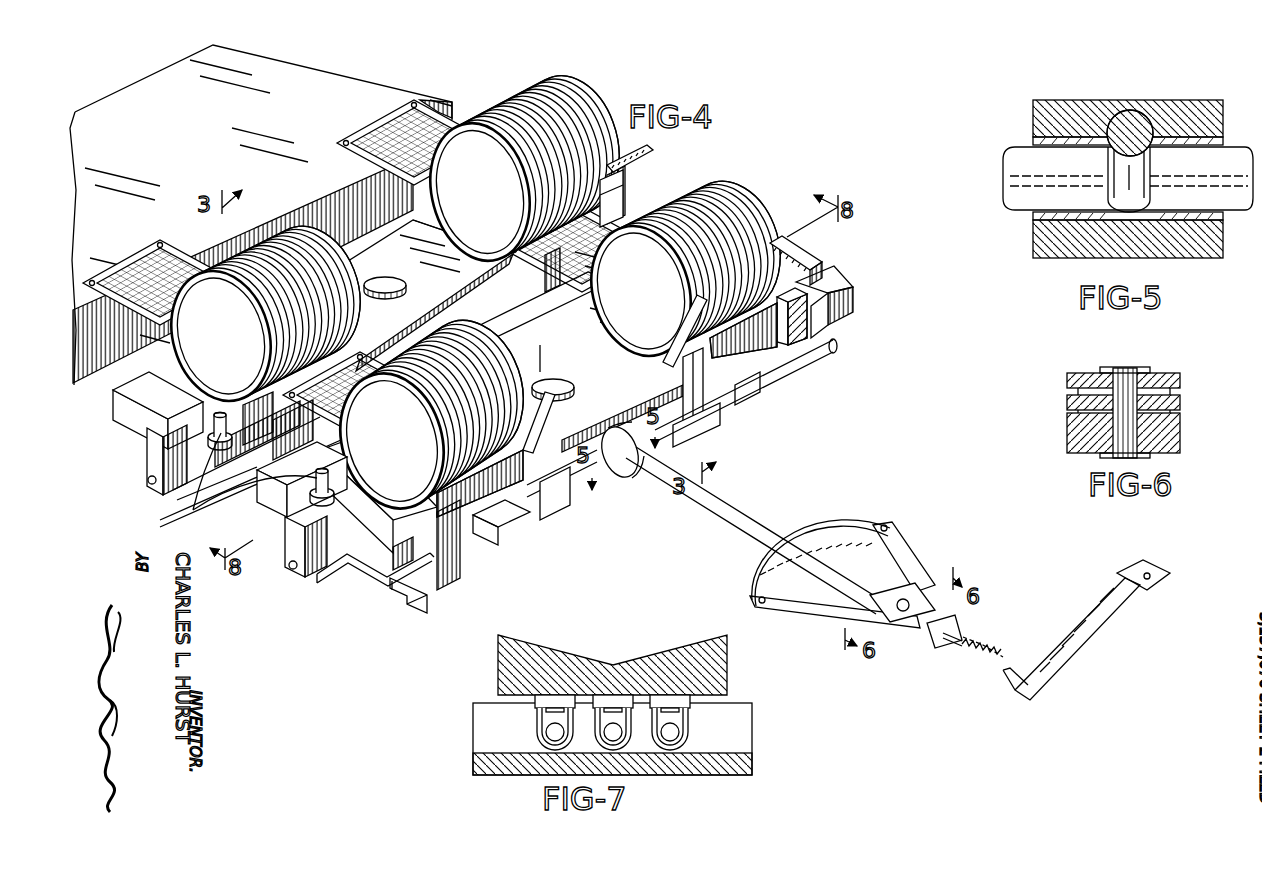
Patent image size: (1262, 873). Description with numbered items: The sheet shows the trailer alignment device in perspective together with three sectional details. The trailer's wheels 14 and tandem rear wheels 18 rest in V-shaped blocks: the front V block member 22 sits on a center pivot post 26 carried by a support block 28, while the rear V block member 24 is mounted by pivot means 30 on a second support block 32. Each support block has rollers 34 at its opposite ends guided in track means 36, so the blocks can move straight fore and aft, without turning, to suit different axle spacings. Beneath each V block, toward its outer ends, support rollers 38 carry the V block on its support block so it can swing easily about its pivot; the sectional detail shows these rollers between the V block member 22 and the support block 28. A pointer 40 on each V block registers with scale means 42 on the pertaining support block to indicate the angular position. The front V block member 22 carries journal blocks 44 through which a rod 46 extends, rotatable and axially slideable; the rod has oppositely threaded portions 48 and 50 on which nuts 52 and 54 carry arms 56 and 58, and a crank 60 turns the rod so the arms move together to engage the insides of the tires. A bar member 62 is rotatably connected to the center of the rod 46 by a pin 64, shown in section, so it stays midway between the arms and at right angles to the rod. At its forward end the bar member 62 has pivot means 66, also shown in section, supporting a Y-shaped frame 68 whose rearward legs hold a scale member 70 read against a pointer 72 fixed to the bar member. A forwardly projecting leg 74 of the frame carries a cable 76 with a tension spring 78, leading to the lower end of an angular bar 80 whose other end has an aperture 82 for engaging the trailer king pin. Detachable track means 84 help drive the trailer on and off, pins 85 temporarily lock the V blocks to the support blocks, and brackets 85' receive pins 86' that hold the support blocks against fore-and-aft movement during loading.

In FIG. 4, the wheels 14 is at (396, 436).
In FIG. 4, the rear wheels 18 is at (482, 194).
In FIG. 4, the V block member 22 is at (554, 387).
In FIG. 7, the V block member 22 is at (596, 662).
In FIG. 4, the V block member 24 is at (448, 270).
In FIG. 4, the center pivot post 26 is at (540, 346).
In FIG. 4, the support block 28 is at (277, 531).
In FIG. 7, the support block 28 is at (752, 763).
In FIG. 4, the pivot means 30 is at (386, 284).
In FIG. 4, the support block 32 is at (126, 418).
In FIG. 4, the rollers 34 is at (142, 452).
In FIG. 4, the track means 36 is at (413, 611).
In FIG. 7, the support rollers 38 is at (536, 736).
In FIG. 4, the pointer 40 is at (614, 180).
In FIG. 4, the scale means 42 is at (631, 160).
In FIG. 4, the journal blocks 44 is at (843, 272).
In FIG. 4, the rod 46 is at (778, 378).
In FIG. 5, the rod 46 is at (1008, 164).
In FIG. 4, the threaded portion 48 is at (522, 529).
In FIG. 4, the threaded portion 50 is at (736, 408).
In FIG. 4, the nut 52 is at (566, 506).
In FIG. 4, the nut 54 is at (708, 429).
In FIG. 4, the arm 56 is at (548, 426).
In FIG. 4, the arm 58 is at (664, 353).
In FIG. 4, the crank 60 is at (390, 604).
In FIG. 4, the bar member 62 is at (702, 510).
In FIG. 5, the bar member 62 is at (1068, 251).
In FIG. 6, the bar member 62 is at (1070, 454).
In FIG. 4, the pin 64 is at (618, 424).
In FIG. 5, the pin 64 is at (1114, 144).
In FIG. 4, the pivot means 66 is at (904, 602).
In FIG. 6, the pivot means 66 is at (1130, 368).
In FIG. 4, the Y-shaped frame 68 is at (898, 566).
In FIG. 6, the Y-shaped frame 68 is at (1066, 400).
In FIG. 4, the scale member 70 is at (846, 530).
In FIG. 4, the pointer 72 is at (810, 544).
In FIG. 4, the leg 74 is at (930, 647).
In FIG. 6, the leg 74 is at (1088, 362).
In FIG. 4, the cable 76 is at (954, 647).
In FIG. 4, the tension spring 78 is at (972, 661).
In FIG. 4, the angular bar 80 is at (1090, 640).
In FIG. 4, the aperture 82 is at (1144, 588).
In FIG. 4, the detachable track means 84 is at (362, 134).
In FIG. 4, the pins 85 is at (244, 482).
In FIG. 4, the brackets 85' is at (237, 520).
In FIG. 4, the pins 86' is at (204, 546).